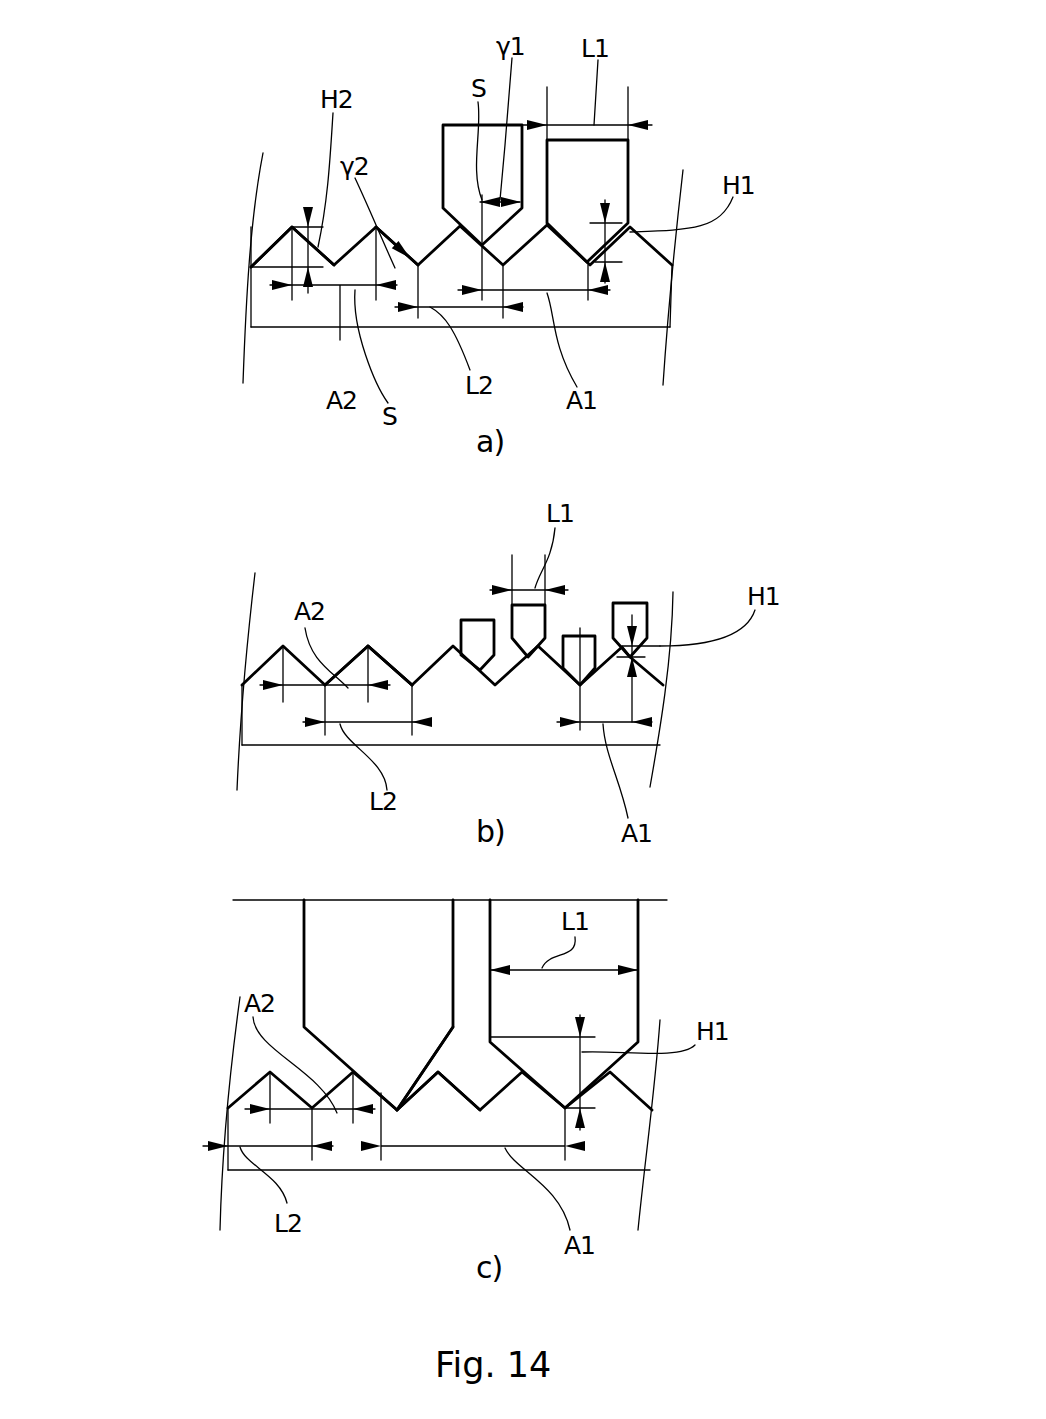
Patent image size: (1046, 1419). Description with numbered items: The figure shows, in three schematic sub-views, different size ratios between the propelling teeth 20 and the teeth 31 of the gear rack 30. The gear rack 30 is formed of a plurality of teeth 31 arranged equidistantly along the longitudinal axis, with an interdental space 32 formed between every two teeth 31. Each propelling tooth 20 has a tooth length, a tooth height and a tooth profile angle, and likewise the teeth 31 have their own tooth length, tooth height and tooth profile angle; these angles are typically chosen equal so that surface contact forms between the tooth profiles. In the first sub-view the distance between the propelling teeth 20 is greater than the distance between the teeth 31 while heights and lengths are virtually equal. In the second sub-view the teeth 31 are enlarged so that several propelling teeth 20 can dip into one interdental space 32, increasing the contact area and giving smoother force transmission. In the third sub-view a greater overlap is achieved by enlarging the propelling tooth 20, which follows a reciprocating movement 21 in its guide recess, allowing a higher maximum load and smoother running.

The propelling tooth 20 is at (690, 117).
The reciprocating movement 21 is at (598, 180).
The gear rack 30 is at (212, 294).
The teeth 31 is at (280, 247).
The interdental space 32 is at (416, 243).